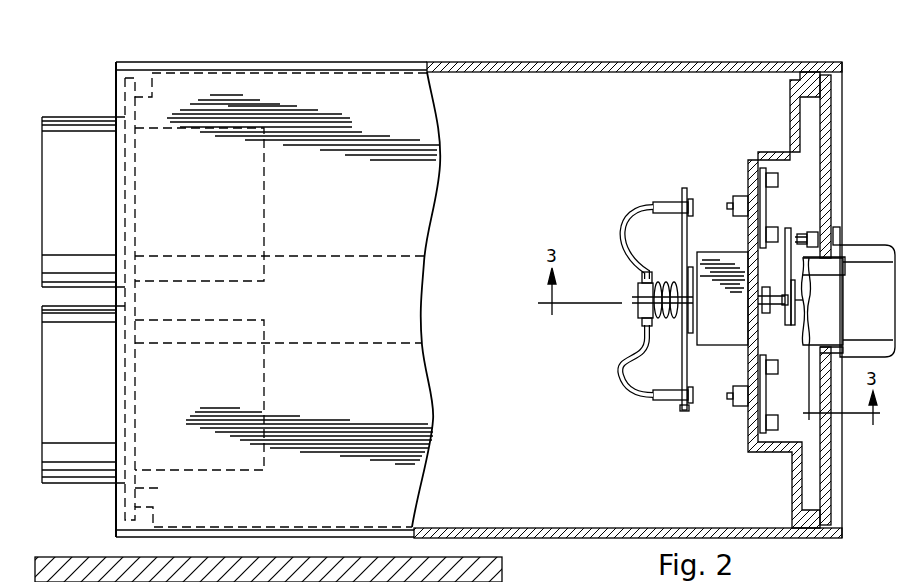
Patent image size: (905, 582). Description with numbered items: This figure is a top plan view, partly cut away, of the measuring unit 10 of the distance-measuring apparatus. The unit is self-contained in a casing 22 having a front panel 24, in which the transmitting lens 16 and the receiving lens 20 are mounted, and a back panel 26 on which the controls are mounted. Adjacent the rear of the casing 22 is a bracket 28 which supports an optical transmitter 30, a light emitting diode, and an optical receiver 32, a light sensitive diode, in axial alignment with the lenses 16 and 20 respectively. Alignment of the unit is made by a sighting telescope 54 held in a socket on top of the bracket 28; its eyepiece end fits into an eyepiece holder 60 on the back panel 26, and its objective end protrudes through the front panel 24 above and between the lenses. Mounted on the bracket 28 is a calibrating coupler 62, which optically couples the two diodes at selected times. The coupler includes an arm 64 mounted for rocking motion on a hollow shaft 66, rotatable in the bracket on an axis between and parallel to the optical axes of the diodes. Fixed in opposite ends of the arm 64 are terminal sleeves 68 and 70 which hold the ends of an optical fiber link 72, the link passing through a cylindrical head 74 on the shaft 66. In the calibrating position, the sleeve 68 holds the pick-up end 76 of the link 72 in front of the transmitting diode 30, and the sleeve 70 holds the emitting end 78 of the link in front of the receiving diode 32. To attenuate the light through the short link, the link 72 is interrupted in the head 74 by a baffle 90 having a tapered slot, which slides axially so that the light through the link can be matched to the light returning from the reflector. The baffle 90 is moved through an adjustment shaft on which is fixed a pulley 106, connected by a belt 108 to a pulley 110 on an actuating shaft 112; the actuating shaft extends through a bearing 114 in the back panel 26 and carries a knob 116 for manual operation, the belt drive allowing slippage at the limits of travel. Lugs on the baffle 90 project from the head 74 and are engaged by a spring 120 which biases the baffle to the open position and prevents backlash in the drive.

The measuring unit 10 is at (372, 62).
The transmitting lens 16 is at (92, 128).
The receiving lens 20 is at (86, 478).
The casing 22 is at (562, 70).
The front panel 24 is at (160, 489).
The back panel 26 is at (828, 495).
The bracket 28 is at (790, 110).
The optical transmitter 30 is at (742, 196).
The optical receiver 32 is at (740, 410).
The sighting telescope 54 is at (832, 318).
The eyepiece holder 60 is at (868, 255).
The calibrating coupler 62 is at (618, 389).
The arm 64 is at (684, 192).
The hollow shaft 66 is at (767, 287).
The terminal sleeve 68 is at (660, 205).
The terminal sleeve 70 is at (665, 398).
The optical fiber link 72 is at (625, 365).
The cylindrical head 74 is at (638, 290).
The pick-up end 76 is at (691, 208).
The emitting end 78 is at (693, 398).
The baffle 90 is at (638, 306).
The pulley 106 is at (797, 300).
The belt 108 is at (797, 262).
The pulley 110 is at (789, 228).
The actuating shaft 112 is at (775, 312).
The bearing 114 is at (803, 236).
The knob 116 is at (838, 232).
The spring 120 is at (672, 320).